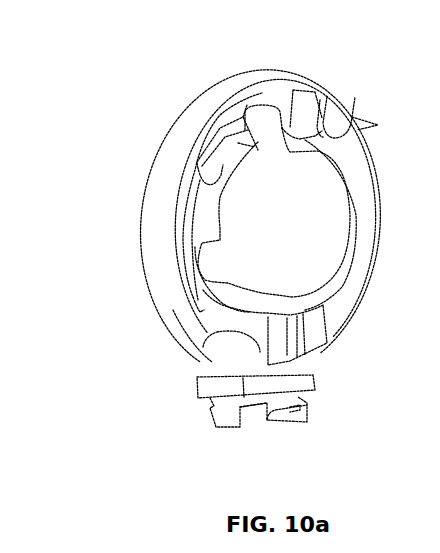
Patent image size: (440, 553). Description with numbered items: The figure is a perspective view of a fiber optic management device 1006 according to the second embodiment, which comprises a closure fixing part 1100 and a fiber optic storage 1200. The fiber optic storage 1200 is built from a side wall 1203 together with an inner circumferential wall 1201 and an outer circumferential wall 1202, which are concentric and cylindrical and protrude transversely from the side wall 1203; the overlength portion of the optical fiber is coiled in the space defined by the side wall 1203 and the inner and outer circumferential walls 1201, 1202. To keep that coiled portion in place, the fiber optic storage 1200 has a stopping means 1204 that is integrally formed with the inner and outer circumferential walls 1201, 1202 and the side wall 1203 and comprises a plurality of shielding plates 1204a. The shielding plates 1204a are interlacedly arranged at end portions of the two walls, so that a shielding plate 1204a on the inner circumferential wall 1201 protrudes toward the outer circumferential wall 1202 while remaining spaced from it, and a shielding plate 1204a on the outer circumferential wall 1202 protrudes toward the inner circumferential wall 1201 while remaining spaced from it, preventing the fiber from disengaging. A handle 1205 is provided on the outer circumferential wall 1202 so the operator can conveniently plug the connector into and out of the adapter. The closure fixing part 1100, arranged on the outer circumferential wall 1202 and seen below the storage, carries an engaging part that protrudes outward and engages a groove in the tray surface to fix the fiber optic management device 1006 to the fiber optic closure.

The fiber optic management device 1006 is at (130, 71).
The fiber optic storage 1200 is at (170, 133).
The inner circumferential wall 1201 is at (213, 207).
The outer circumferential wall 1202 is at (172, 250).
The side wall 1203 is at (200, 318).
The stopping means 1204 is at (343, 100).
The shielding plates 1204a is at (348, 112).
The handle 1205 is at (360, 113).
The closure fixing part 1100 is at (200, 393).